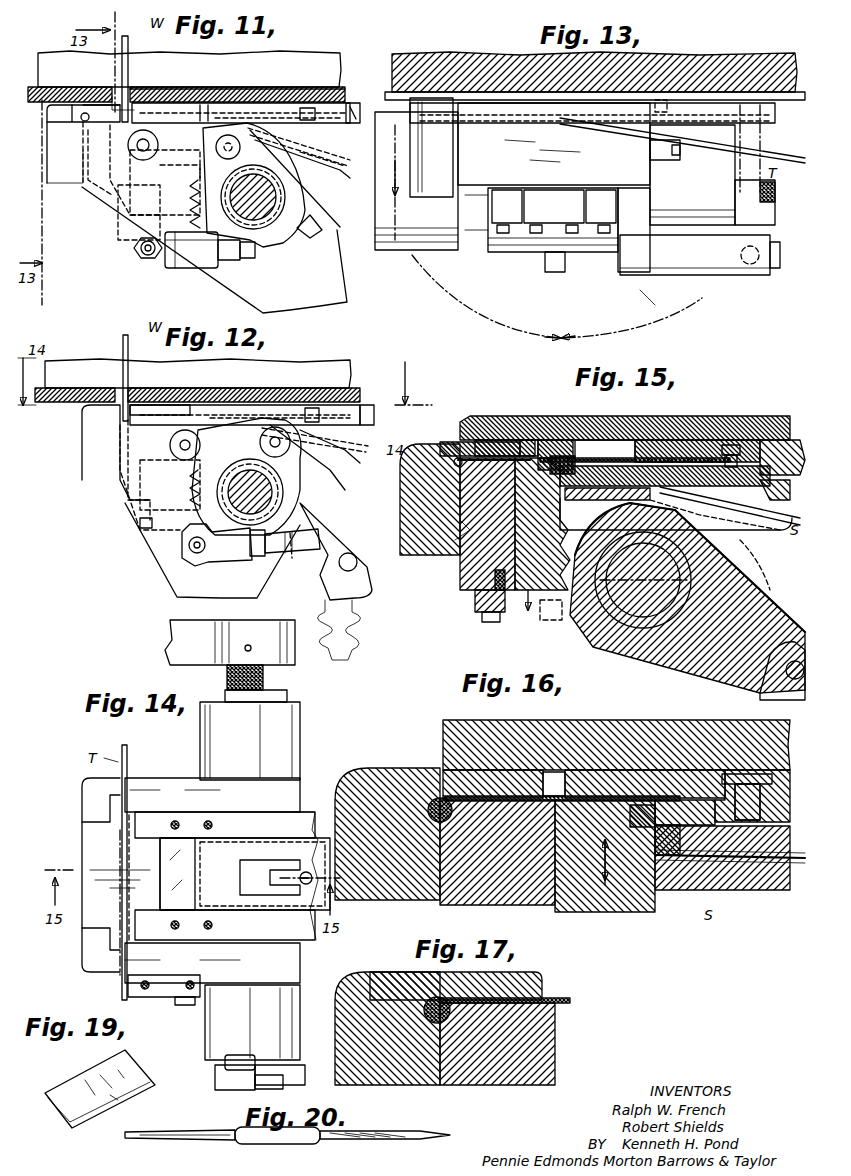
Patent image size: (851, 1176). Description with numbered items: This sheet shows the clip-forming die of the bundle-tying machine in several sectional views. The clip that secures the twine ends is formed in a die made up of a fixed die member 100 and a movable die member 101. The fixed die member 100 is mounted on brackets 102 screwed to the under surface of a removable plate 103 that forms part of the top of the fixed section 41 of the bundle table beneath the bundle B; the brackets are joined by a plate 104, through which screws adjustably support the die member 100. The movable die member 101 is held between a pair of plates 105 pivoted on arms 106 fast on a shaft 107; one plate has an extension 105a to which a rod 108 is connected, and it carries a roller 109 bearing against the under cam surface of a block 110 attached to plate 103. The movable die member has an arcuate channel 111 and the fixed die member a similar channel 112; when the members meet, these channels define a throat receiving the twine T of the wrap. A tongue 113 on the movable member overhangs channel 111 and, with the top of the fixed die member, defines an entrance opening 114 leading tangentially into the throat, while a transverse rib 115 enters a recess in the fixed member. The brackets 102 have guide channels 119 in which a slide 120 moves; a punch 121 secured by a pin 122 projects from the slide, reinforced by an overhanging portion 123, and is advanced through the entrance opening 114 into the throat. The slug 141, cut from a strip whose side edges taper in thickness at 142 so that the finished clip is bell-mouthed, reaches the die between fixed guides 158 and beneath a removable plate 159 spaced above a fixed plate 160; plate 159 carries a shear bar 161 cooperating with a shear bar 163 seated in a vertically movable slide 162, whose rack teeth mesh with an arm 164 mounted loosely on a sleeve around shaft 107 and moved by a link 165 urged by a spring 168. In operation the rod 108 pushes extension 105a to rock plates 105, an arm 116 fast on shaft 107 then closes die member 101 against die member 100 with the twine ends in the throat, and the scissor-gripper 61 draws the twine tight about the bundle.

In FIG. 11, the bar B is at (312, 58).
In FIG. 13, the bar B is at (772, 62).
In FIG. 12, the bar B is at (332, 362).
In FIG. 16, the tube T is at (432, 790).
In FIG. 17, the tube T is at (430, 1000).
In FIG. 11, the fixed section of the bundle table 41 is at (330, 84).
In FIG. 12, the fixed section of the bundle table 41 is at (352, 386).
In FIG. 15, the fixed section of the bundle table 41 is at (778, 416).
In FIG. 13, the scissor-gripper 61 is at (438, 178).
In FIG. 11, the fixed die member 100 is at (105, 228).
In FIG. 13, the fixed die member 100 is at (595, 235).
In FIG. 12, the fixed die member 100 is at (130, 500).
In FIG. 15, the fixed die member 100 is at (470, 595).
In FIG. 16, the fixed die member 100 is at (505, 895).
In FIG. 17, the fixed die member 100 is at (498, 1078).
In FIG. 11, the movable die member 101 is at (62, 172).
In FIG. 13, the movable die member 101 is at (470, 240).
In FIG. 12, the movable die member 101 is at (98, 480).
In FIG. 14, the movable die member 101 is at (90, 835).
In FIG. 15, the movable die member 101 is at (415, 555).
In FIG. 16, the movable die member 101 is at (390, 890).
In FIG. 17, the movable die member 101 is at (398, 1080).
In FIG. 11, the brackets 102 is at (340, 152).
In FIG. 13, the brackets 102 is at (490, 255).
In FIG. 12, the brackets 102 is at (140, 518).
In FIG. 14, the brackets 102 is at (182, 810).
In FIG. 15, the brackets 102 is at (770, 545).
In FIG. 11, the removable plate 103 is at (185, 90).
In FIG. 13, the removable plate 103 is at (428, 96).
In FIG. 12, the removable plate 103 is at (302, 402).
In FIG. 15, the removable plate 103 is at (470, 430).
In FIG. 16, the removable plate 103 is at (532, 718).
In FIG. 13, the plate 104 is at (530, 240).
In FIG. 12, the plate 104 is at (142, 528).
In FIG. 15, the plate 104 is at (487, 620).
In FIG. 14, the plates 105 is at (146, 795).
In FIG. 11, the extension 105a is at (128, 262).
In FIG. 13, the extension 105a is at (650, 290).
In FIG. 12, the extension 105a is at (175, 525).
In FIG. 11, the arms 106 is at (300, 170).
In FIG. 13, the arms 106 is at (405, 250).
In FIG. 12, the arms 106 is at (320, 478).
In FIG. 14, the arms 106 is at (212, 698).
In FIG. 11, the shaft 107 is at (268, 240).
In FIG. 13, the shaft 107 is at (380, 245).
In FIG. 12, the shaft 107 is at (280, 500).
In FIG. 14, the shaft 107 is at (268, 674).
In FIG. 15, the shaft 107 is at (648, 630).
In FIG. 11, the rod 108 is at (230, 258).
In FIG. 13, the rod 108 is at (748, 265).
In FIG. 12, the rod 108 is at (288, 560).
In FIG. 14, the rod 108 is at (290, 1070).
In FIG. 11, the roller 109 is at (145, 165).
In FIG. 13, the roller 109 is at (660, 165).
In FIG. 12, the roller 109 is at (178, 460).
In FIG. 14, the roller 109 is at (170, 990).
In FIG. 11, the block 110 is at (152, 103).
In FIG. 13, the block 110 is at (690, 100).
In FIG. 12, the block 110 is at (222, 404).
In FIG. 14, the block 110 is at (155, 988).
In FIG. 11, the arcuate channel 111 is at (88, 122).
In FIG. 13, the arcuate channel 111 is at (580, 125).
In FIG. 15, the arcuate channel 111 is at (455, 456).
In FIG. 11, the channel 112 is at (138, 150).
In FIG. 12, the channel 112 is at (134, 418).
In FIG. 15, the channel 112 is at (492, 440).
In FIG. 11, the tongue 113 is at (104, 110).
In FIG. 12, the tongue 113 is at (150, 402).
In FIG. 14, the tongue 113 is at (145, 858).
In FIG. 15, the tongue 113 is at (478, 442).
In FIG. 16, the tongue 113 is at (485, 780).
In FIG. 17, the tongue 113 is at (540, 980).
In FIG. 12, the entrance opening 114 is at (170, 404).
In FIG. 15, the entrance opening 114 is at (510, 440).
In FIG. 11, the transverse rib 115 is at (100, 200).
In FIG. 15, the transverse rib 115 is at (455, 560).
In FIG. 11, the arm 116 is at (347, 303).
In FIG. 12, the arm 116 is at (178, 580).
In FIG. 14, the arm 116 is at (178, 640).
In FIG. 14, the guide channels 119 is at (190, 820).
In FIG. 15, the guide channels 119 is at (572, 452).
In FIG. 11, the slide 120 is at (354, 103).
In FIG. 12, the slide 120 is at (362, 408).
In FIG. 15, the slide 120 is at (800, 455).
In FIG. 16, the slide 120 is at (788, 782).
In FIG. 11, the punch 121 is at (232, 100).
In FIG. 12, the punch 121 is at (262, 404).
In FIG. 14, the punch 121 is at (282, 850).
In FIG. 15, the punch 121 is at (610, 455).
In FIG. 16, the punch 121 is at (565, 790).
In FIG. 17, the punch 121 is at (560, 1003).
In FIG. 15, the pin 122 is at (740, 462).
In FIG. 16, the pin 122 is at (755, 780).
In FIG. 14, the overhanging portion 123 is at (275, 870).
In FIG. 15, the overhanging portion 123 is at (655, 475).
In FIG. 16, the overhanging portion 123 is at (600, 778).
In FIG. 14, the slug 141 is at (172, 896).
In FIG. 19, the slug 141 is at (105, 1110).
In FIG. 15, the slug 141 is at (535, 440).
In FIG. 19, the tapered side edges 142 is at (148, 1058).
In FIG. 11, the fixed guides 158 is at (345, 125).
In FIG. 12, the fixed guides 158 is at (358, 438).
In FIG. 15, the fixed guides 158 is at (785, 500).
In FIG. 15, the removable plate 159 is at (690, 470).
In FIG. 16, the removable plate 159 is at (758, 868).
In FIG. 15, the fixed plate 160 is at (680, 505).
In FIG. 16, the fixed plate 160 is at (690, 880).
In FIG. 16, the shear bar 161 is at (670, 890).
In FIG. 11, the slide 162 is at (178, 258).
In FIG. 15, the slide 162 is at (530, 620).
In FIG. 16, the slide 162 is at (600, 890).
In FIG. 15, the shear bar 163 is at (555, 445).
In FIG. 16, the shear bar 163 is at (645, 795).
In FIG. 11, the arm 164 is at (322, 222).
In FIG. 12, the arm 164 is at (298, 556).
In FIG. 15, the arm 164 is at (610, 645).
In FIG. 13, the link 165 is at (556, 268).
In FIG. 12, the link 165 is at (365, 585).
In FIG. 15, the link 165 is at (770, 690).
In FIG. 12, the spring 168 is at (352, 622).